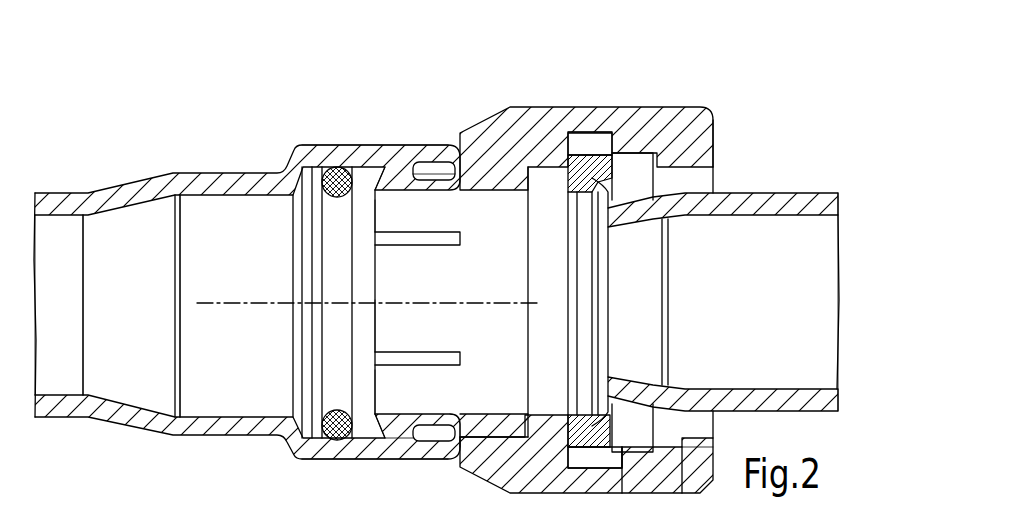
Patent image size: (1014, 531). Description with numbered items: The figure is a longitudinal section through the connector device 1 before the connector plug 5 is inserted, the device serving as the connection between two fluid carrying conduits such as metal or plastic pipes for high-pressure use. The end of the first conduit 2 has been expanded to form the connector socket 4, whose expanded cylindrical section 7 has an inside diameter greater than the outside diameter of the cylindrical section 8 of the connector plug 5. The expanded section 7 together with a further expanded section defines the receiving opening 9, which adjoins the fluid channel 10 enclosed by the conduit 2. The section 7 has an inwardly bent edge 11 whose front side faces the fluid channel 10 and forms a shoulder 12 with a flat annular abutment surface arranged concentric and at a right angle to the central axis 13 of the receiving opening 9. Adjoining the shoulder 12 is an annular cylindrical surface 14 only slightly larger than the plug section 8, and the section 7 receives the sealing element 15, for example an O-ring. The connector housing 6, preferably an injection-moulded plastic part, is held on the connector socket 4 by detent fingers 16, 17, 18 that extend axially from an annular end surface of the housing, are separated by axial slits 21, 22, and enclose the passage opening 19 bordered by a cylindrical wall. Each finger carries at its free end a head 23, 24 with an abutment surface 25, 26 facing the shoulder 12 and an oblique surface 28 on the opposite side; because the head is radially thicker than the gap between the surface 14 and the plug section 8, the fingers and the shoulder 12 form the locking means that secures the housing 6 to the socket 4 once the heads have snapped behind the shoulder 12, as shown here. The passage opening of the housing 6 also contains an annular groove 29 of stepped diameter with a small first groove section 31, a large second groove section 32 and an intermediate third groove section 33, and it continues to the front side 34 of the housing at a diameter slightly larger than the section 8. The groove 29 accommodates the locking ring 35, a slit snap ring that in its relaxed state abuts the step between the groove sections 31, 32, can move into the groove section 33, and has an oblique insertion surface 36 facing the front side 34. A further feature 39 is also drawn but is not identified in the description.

The connector device 1 is at (748, 69).
The fluid carrying conduit 2 is at (83, 203).
The connector socket 4 is at (200, 169).
The connector plug 5 is at (871, 112).
The connector housing 6 is at (487, 132).
The cylindrical section 7 is at (368, 131).
The cylindrical section 8 is at (792, 170).
The receiving opening 9 is at (281, 326).
The fluid channel 10 is at (49, 325).
The edge 11 is at (432, 163).
The shoulder 12 is at (427, 443).
The central axis 13 is at (398, 302).
The annular cylindrical surface 14 is at (442, 443).
The sealing element 15 is at (300, 456).
The detent finger 16 is at (392, 227).
The detent finger 17 is at (392, 344).
The detent finger 18 is at (392, 404).
The passage opening 19 is at (494, 292).
The slit 21 is at (442, 232).
The slit 22 is at (441, 352).
The head 23 is at (395, 178).
The head 24 is at (380, 447).
The abutment surface 25 is at (402, 450).
The abutment surface 26 is at (408, 170).
The oblique surface 28 is at (353, 160).
The annular groove 29 is at (601, 117).
The first groove section 31 is at (548, 163).
The second groove section 32 is at (578, 128).
The third groove section 33 is at (634, 151).
The front side 34 is at (715, 147).
The locking ring 35 is at (590, 432).
The oblique insertion surface 36 is at (605, 367).
The recess 39 is at (662, 530).